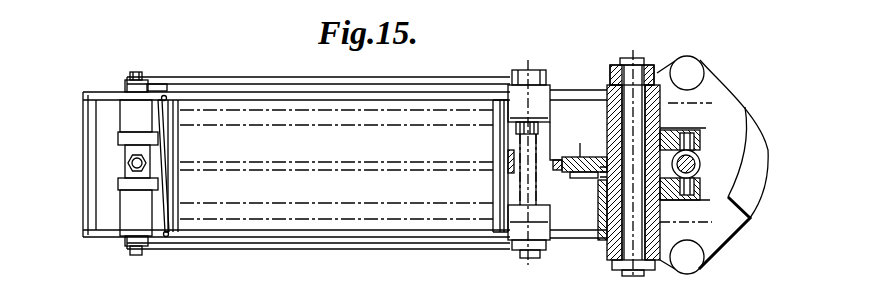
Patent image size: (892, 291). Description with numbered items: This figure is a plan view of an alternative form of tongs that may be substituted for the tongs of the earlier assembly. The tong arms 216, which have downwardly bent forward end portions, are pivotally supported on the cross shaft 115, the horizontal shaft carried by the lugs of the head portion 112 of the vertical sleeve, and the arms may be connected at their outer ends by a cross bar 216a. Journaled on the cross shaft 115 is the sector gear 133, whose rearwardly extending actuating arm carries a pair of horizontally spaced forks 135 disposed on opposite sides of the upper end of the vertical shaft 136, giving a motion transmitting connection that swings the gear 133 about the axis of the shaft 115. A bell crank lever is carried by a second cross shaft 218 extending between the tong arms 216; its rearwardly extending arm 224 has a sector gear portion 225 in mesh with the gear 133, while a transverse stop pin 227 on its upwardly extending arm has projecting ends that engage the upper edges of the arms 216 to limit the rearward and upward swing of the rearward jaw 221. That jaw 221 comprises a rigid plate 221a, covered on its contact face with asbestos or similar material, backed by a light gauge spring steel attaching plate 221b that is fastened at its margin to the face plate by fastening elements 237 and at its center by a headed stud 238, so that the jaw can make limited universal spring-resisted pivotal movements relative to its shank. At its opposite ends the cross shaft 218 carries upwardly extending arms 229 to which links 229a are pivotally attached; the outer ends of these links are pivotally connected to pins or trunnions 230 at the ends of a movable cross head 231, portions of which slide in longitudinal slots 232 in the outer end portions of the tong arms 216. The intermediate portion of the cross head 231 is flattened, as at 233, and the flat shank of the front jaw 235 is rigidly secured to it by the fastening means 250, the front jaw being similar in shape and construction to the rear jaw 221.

The head portion 112 is at (718, 235).
The cross shaft 115 is at (630, 264).
The sector gear 133 is at (552, 175).
The forks 135 is at (708, 130).
The vertical shaft 136 is at (700, 163).
The tong arms 216 is at (435, 97).
The cross bar 216a is at (83, 188).
The cross shaft 218 is at (525, 262).
The rearward jaw 221 is at (505, 230).
The rigid plate 221a is at (172, 202).
The attaching plate 221b is at (170, 190).
The rearwardly extending arm 224 is at (555, 162).
The sector gear portion 225 is at (578, 165).
The stop pin 227 is at (578, 217).
The upwardly extending arms 229 is at (557, 53).
The links 229a is at (208, 77).
The pins or trunnions 230 is at (130, 73).
The movable cross head 231 is at (120, 222).
The longitudinal slots 232 is at (166, 96).
The flattened intermediate portion 233 is at (122, 180).
The front jaw 235 is at (178, 232).
The fastening elements 237 is at (158, 110).
The headed stud 238 is at (163, 162).
The fastening means 250 is at (127, 161).